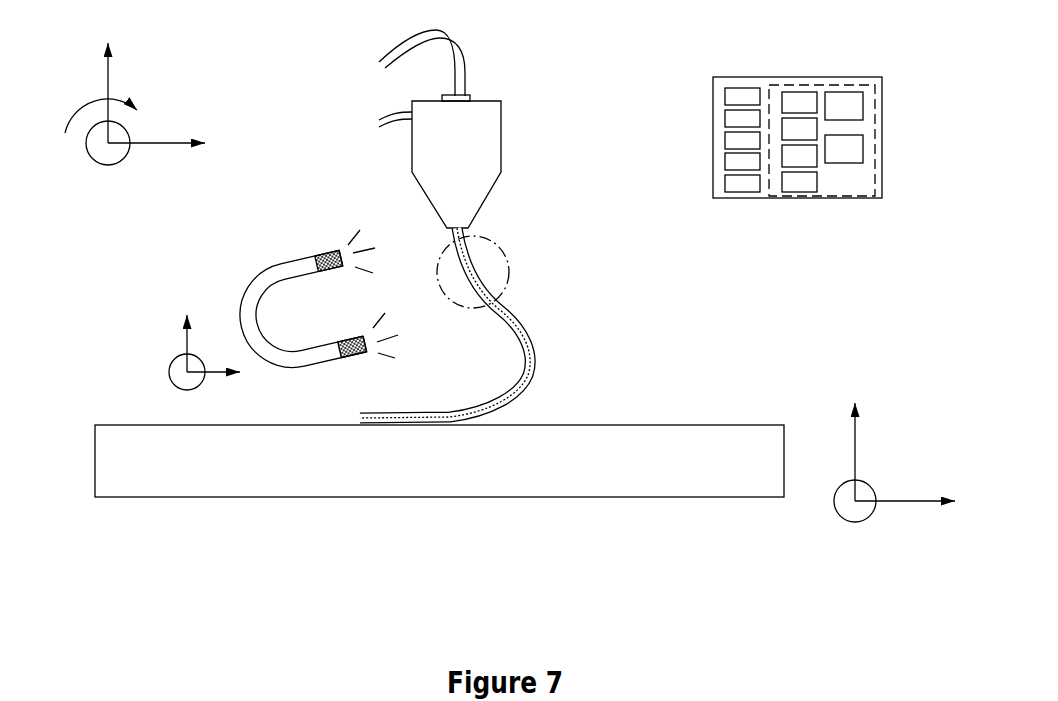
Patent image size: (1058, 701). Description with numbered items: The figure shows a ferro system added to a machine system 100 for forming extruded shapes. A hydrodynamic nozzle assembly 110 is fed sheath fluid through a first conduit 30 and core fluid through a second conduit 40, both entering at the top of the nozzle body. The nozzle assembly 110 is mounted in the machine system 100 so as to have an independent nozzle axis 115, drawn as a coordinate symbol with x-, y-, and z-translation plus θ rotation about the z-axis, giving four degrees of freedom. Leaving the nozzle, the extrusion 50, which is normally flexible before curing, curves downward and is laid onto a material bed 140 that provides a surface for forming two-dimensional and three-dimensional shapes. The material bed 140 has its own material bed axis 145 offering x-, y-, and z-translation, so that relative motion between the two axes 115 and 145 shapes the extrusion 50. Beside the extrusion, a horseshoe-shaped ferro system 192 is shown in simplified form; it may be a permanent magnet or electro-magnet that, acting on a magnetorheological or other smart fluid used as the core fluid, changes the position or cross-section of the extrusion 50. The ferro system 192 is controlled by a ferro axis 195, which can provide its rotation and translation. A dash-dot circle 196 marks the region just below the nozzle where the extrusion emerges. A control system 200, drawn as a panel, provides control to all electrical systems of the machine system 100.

The nozzle axis 115 is at (163, 73).
The first conduit 30 is at (462, 57).
The second conduit 40 is at (390, 108).
The hydrodynamic nozzle assembly 110 is at (500, 125).
The extrusion 50 is at (532, 355).
The alignment region 196 is at (502, 257).
The ferro system 192 is at (253, 280).
The ferro axis 195 is at (160, 362).
The material bed 140 is at (457, 473).
The machine system 100 is at (263, 508).
The material bed axis 145 is at (812, 518).
The control system 200 is at (822, 213).